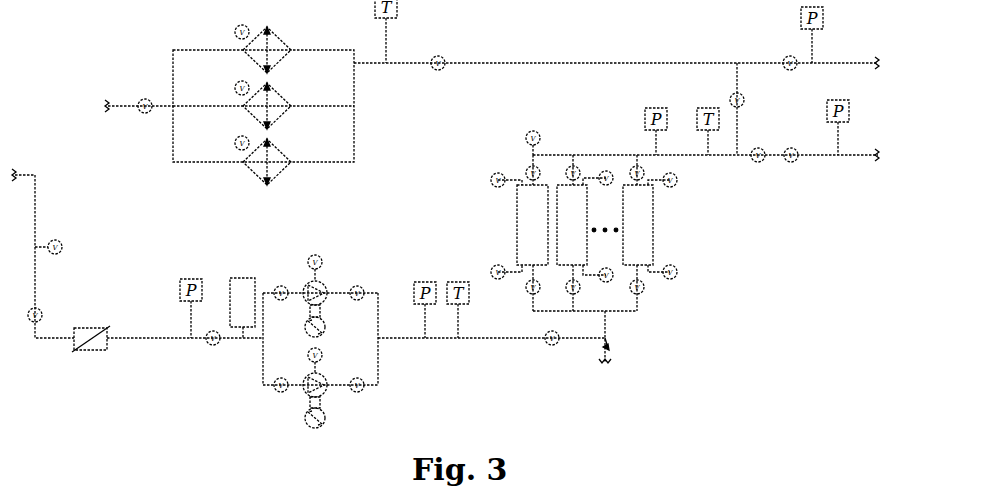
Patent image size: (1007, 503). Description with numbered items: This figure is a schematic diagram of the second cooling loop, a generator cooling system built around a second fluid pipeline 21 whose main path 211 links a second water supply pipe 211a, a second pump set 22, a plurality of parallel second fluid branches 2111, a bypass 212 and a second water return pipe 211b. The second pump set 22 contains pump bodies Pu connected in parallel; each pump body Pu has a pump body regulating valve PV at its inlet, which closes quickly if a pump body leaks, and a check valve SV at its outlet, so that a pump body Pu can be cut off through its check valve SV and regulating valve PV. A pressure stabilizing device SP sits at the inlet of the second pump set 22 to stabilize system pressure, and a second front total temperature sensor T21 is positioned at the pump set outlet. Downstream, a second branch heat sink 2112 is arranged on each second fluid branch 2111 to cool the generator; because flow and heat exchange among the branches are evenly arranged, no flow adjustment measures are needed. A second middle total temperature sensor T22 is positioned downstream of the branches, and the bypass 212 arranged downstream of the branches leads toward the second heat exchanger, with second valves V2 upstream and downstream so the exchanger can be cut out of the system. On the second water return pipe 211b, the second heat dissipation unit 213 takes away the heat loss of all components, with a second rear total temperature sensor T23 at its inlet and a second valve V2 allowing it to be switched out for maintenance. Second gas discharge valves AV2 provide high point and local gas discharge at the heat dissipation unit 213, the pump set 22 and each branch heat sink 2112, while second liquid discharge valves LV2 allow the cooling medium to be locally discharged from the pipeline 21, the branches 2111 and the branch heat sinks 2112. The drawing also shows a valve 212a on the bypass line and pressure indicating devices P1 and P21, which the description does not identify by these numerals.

The second fluid pipeline 21 is at (567, 61).
The main path 211 is at (740, 135).
The second water supply pipe 211a is at (38, 218).
The second water return pipe 211b is at (113, 102).
The second fluid branches 2111 is at (642, 310).
The second branch heat sinks 2112 is at (525, 228).
The bypass 212 is at (812, 160).
The outlet valve 212a is at (793, 165).
The second heat dissipation unit 213 is at (293, 34).
The second pump set 22 is at (344, 269).
The second gas discharge valve AV2 is at (234, 31).
The second valve V2 is at (143, 113).
The second liquid discharge valve LV2 is at (61, 253).
The pump body regulating valve PV is at (277, 392).
The check valve SV is at (364, 392).
The pump body Pu is at (306, 284).
The pressure stabilizing device SP is at (240, 278).
The pressure gauge P1 is at (815, 55).
The pressure regulating valve P21 is at (88, 352).
The second front total temperature sensor T21 is at (462, 330).
The second middle total temperature sensor T22 is at (697, 110).
The second rear total temperature sensor T23 is at (390, 50).